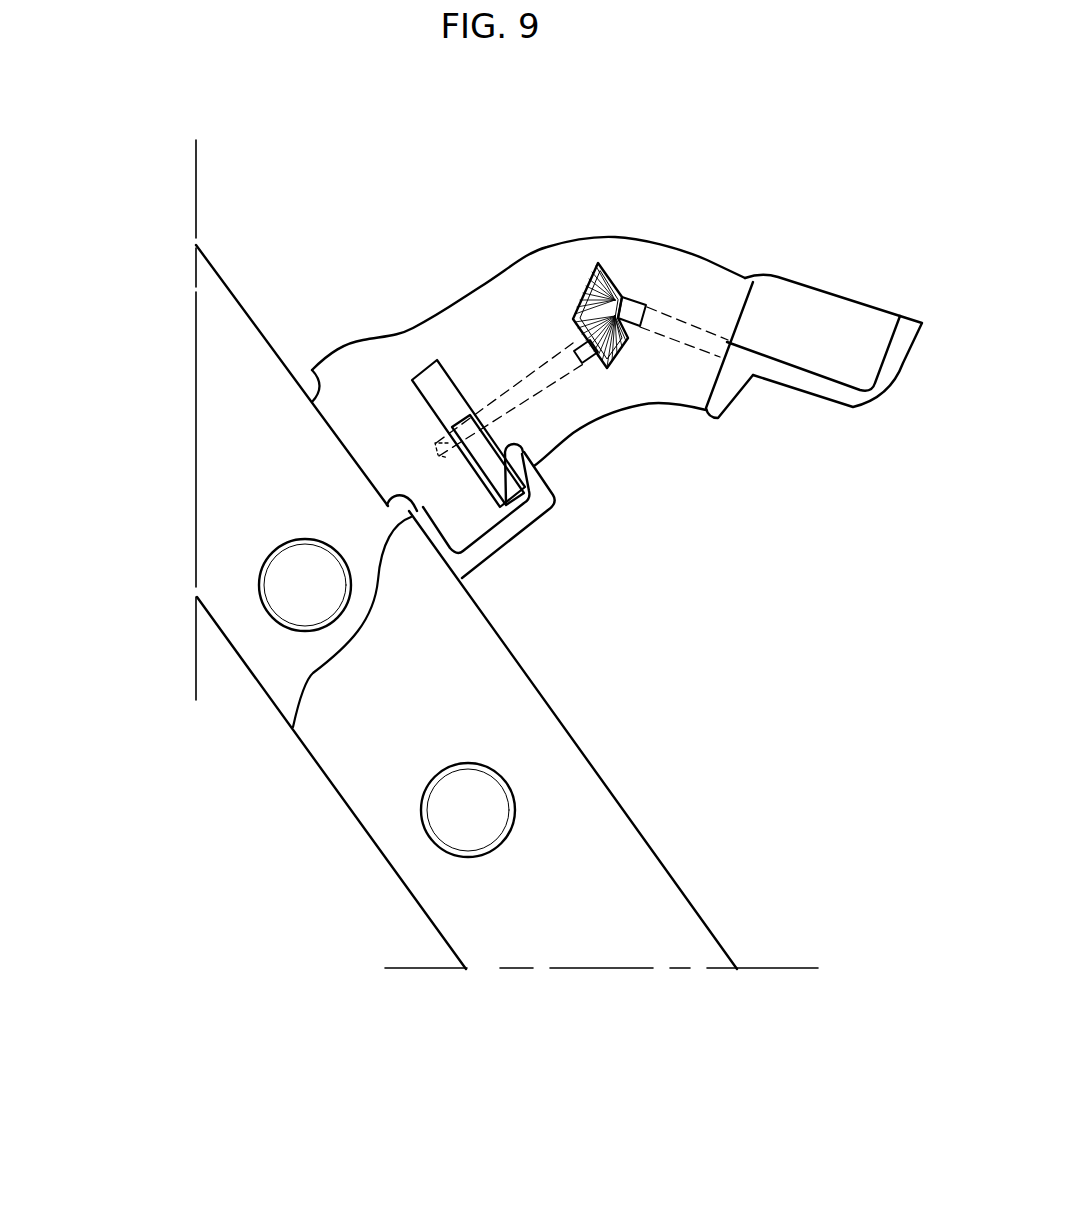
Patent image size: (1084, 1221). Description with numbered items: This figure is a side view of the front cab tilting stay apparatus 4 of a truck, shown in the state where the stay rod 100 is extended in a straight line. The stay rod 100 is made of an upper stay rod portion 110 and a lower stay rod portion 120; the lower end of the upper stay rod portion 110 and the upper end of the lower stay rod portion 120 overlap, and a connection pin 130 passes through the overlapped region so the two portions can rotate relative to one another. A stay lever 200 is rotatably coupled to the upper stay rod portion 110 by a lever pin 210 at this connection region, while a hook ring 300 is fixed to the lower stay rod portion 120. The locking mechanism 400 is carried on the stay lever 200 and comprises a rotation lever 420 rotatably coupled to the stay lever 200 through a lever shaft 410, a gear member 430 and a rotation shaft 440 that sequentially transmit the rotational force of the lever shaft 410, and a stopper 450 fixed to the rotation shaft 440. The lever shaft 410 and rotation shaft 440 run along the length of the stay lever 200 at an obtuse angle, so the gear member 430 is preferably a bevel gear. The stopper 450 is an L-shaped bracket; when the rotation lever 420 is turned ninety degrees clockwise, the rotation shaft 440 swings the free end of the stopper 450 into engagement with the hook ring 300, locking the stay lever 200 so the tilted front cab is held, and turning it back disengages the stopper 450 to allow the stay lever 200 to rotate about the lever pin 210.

The front cab tilting stay apparatus 4 is at (473, 287).
The stay rod 100 is at (301, 758).
The upper stay rod portion 110 is at (223, 392).
The lower stay rod portion 120 is at (585, 935).
The connection pin 130 is at (458, 814).
The stay lever 200 is at (648, 268).
The lever pin 210 is at (287, 585).
The hook ring 300 is at (537, 510).
The locking mechanism 400 is at (835, 418).
The lever shaft 410 is at (670, 322).
The rotation lever 420 is at (818, 327).
The gear member 430 is at (583, 262).
The rotation shaft 440 is at (541, 246).
The stopper 450 is at (482, 465).